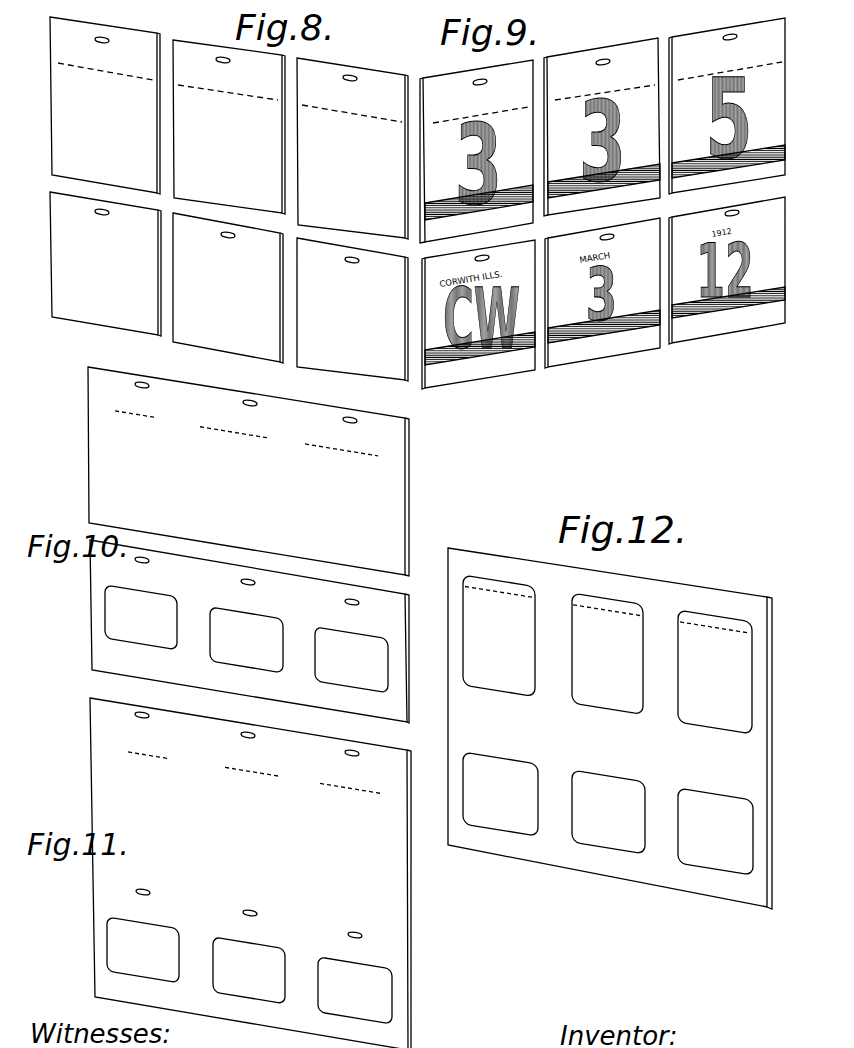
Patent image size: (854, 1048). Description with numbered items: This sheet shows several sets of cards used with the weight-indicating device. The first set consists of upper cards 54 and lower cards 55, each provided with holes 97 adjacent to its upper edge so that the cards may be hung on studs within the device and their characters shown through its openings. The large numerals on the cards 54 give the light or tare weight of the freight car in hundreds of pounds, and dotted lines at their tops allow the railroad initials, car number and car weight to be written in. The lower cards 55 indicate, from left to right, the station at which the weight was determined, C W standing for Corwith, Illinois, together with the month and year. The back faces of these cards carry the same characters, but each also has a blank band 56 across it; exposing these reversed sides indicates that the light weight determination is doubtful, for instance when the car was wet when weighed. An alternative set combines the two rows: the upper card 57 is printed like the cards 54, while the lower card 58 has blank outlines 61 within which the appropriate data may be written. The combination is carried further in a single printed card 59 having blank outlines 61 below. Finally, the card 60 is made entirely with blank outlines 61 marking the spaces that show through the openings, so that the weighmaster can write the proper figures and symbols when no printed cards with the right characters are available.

In FIG. 8, the cards 54 is at (218, 123).
In FIG. 8, the lower cards 55 is at (218, 286).
In FIG. 9, the blank band 56 is at (507, 198).
In FIG. 10, the upper card 57 is at (264, 471).
In FIG. 10, the lower card 58 is at (231, 631).
In FIG. 11, the single printed card 59 is at (266, 873).
In FIG. 12, the card 60 is at (623, 728).
In FIG. 10, the blank outlines 61 is at (315, 673).
In FIG. 11, the blank outlines 61 is at (322, 957).
In FIG. 12, the blank outlines 61 is at (752, 672).
In FIG. 8, the holes 97 is at (105, 37).